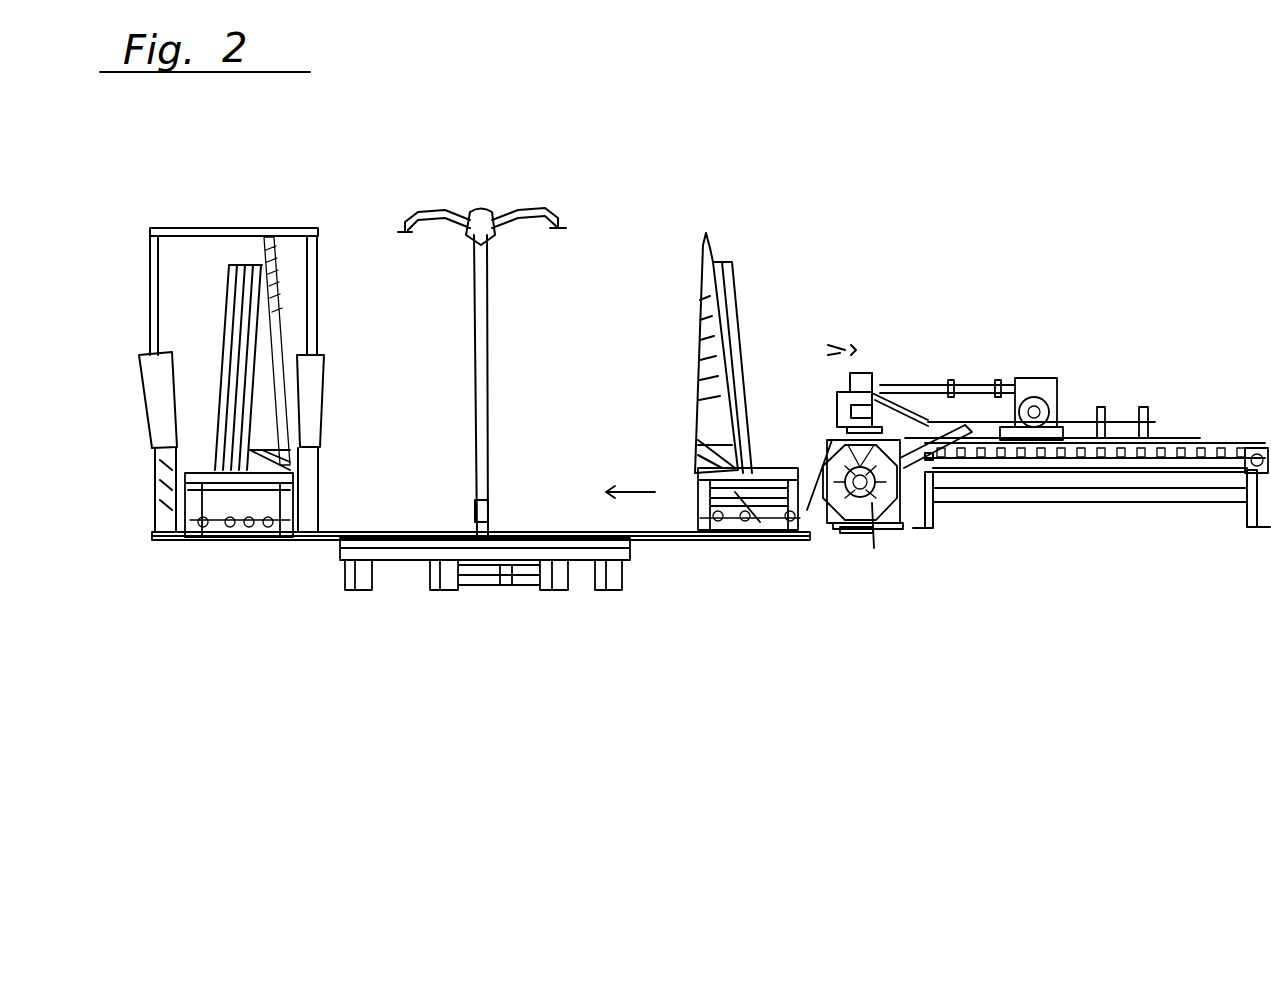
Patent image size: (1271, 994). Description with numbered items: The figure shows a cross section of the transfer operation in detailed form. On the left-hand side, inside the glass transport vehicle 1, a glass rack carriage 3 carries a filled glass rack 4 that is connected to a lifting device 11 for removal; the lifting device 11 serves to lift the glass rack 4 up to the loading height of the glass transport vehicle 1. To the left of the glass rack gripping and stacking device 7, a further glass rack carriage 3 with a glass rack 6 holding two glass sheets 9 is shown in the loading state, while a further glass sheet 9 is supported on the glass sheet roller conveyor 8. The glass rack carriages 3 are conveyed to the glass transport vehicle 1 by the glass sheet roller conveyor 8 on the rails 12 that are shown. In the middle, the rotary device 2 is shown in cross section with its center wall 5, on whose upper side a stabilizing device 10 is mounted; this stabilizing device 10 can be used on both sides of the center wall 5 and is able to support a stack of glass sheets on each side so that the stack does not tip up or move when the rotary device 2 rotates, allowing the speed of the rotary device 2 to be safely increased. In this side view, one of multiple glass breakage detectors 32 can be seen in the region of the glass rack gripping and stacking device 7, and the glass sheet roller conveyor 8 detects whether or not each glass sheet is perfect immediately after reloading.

The glass transport vehicle 1 is at (213, 228).
The rotary device 2 is at (470, 548).
The glass rack carriage 3 is at (768, 478).
The glass rack 4 is at (258, 412).
The center wall 5 is at (483, 442).
The glass rack 6 is at (717, 421).
The glass rack gripping and stacking device 7 is at (870, 505).
The glass sheet roller conveyor 8 is at (1120, 503).
The glass sheet 9 is at (732, 282).
The stabilizing device 10 is at (487, 232).
The lifting device 11 is at (290, 445).
The rails 12 is at (672, 537).
The glass breakage detector 32 is at (858, 373).